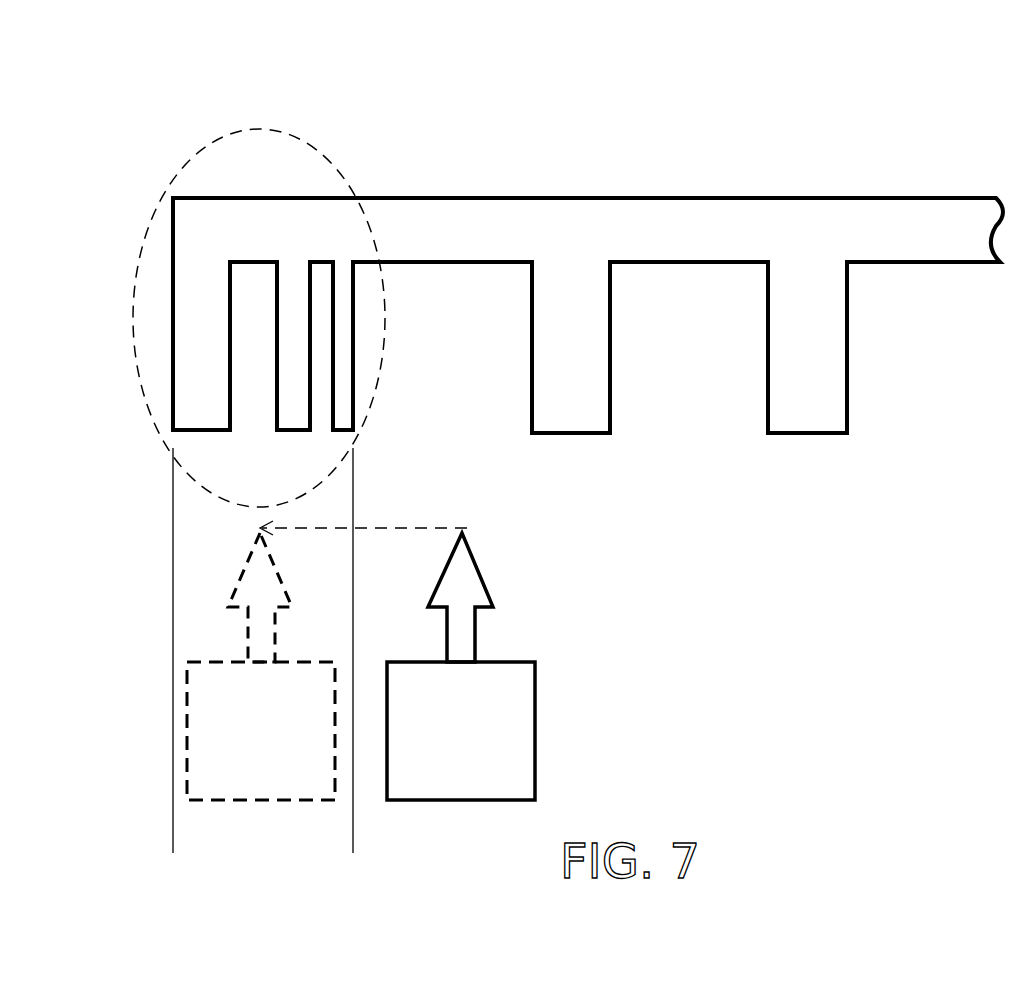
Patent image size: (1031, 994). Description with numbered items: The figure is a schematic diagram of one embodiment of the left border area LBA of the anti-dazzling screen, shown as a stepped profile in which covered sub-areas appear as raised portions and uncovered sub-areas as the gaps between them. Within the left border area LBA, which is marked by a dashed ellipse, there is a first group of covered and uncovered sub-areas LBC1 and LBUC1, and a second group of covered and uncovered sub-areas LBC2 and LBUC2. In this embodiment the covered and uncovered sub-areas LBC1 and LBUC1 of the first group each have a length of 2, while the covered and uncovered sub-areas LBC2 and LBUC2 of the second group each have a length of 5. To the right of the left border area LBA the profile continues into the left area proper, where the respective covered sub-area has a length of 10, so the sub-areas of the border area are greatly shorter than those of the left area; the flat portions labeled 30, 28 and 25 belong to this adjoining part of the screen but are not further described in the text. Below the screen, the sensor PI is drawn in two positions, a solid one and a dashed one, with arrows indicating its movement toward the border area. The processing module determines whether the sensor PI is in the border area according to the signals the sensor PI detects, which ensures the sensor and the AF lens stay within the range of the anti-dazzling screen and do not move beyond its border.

The first flat surface region 30 is at (442, 285).
The second flat surface region 28 is at (689, 285).
The third flat surface region 25 is at (923, 285).
The length of covered sub-area in left area 10 is at (689, 370).
The length of second group sub-areas 5 is at (266, 350).
The length of first group sub-areas 2 is at (329, 350).
The left border area LBA is at (259, 130).
The uncovered sub-area of second group LBUC2 is at (230, 262).
The uncovered sub-area of first group LBUC1 is at (333, 262).
The covered sub-area of second group LBC2 is at (275, 431).
The covered sub-area of first group LBC1 is at (353, 433).
The sensor PI is at (361, 666).